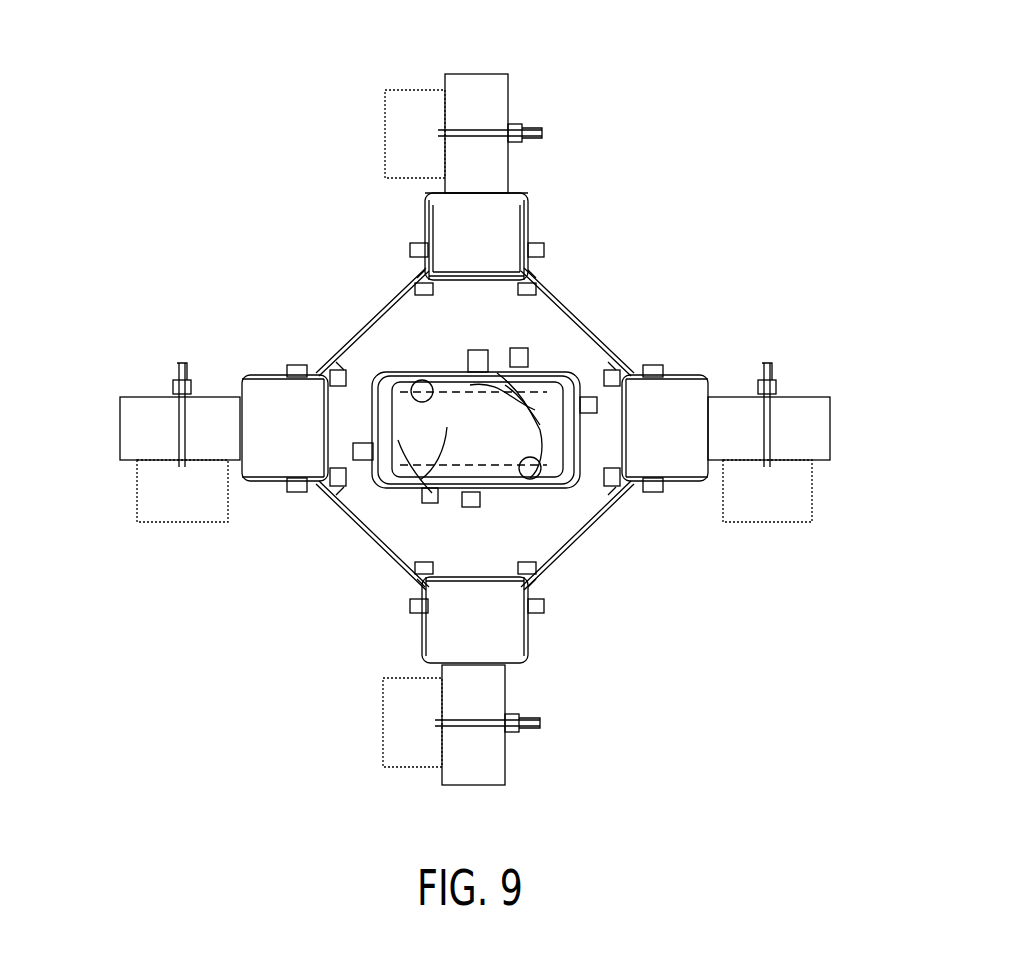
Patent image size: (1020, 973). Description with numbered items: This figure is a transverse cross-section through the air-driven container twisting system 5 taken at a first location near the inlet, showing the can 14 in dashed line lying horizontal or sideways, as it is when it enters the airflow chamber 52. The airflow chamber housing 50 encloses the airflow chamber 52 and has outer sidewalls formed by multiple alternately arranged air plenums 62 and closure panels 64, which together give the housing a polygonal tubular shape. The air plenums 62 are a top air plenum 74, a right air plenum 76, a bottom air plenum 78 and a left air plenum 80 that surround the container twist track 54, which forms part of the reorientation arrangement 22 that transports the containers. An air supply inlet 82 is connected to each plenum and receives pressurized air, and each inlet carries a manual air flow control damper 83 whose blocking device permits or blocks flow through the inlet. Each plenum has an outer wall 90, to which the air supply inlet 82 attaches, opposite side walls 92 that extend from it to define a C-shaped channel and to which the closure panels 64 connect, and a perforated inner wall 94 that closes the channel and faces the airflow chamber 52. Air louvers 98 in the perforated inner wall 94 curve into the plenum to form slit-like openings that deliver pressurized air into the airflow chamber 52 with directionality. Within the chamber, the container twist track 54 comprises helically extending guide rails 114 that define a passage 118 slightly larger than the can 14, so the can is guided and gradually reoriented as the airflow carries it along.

The air-driven container twisting system 5 is at (666, 115).
The can 14 is at (460, 382).
The reorientation arrangement 22 is at (366, 496).
The airflow chamber housing 50 is at (690, 292).
The airflow chamber 52 is at (560, 312).
The container twist track 54 is at (553, 492).
The air plenum 62 is at (540, 186).
The closure panel 64 is at (368, 334).
The top air plenum 74 is at (575, 220).
The right air plenum 76 is at (688, 487).
The bottom air plenum 78 is at (542, 642).
The left air plenum 80 is at (262, 360).
The air supply inlet 82 is at (515, 82).
The manual air flow control damper 83 is at (470, 130).
The outer wall 90 is at (510, 192).
The side wall 92 is at (425, 235).
The perforated inner wall 94 is at (490, 272).
The air louver 98 is at (470, 275).
The guide rail 114 is at (548, 447).
The passage 118 is at (476, 472).